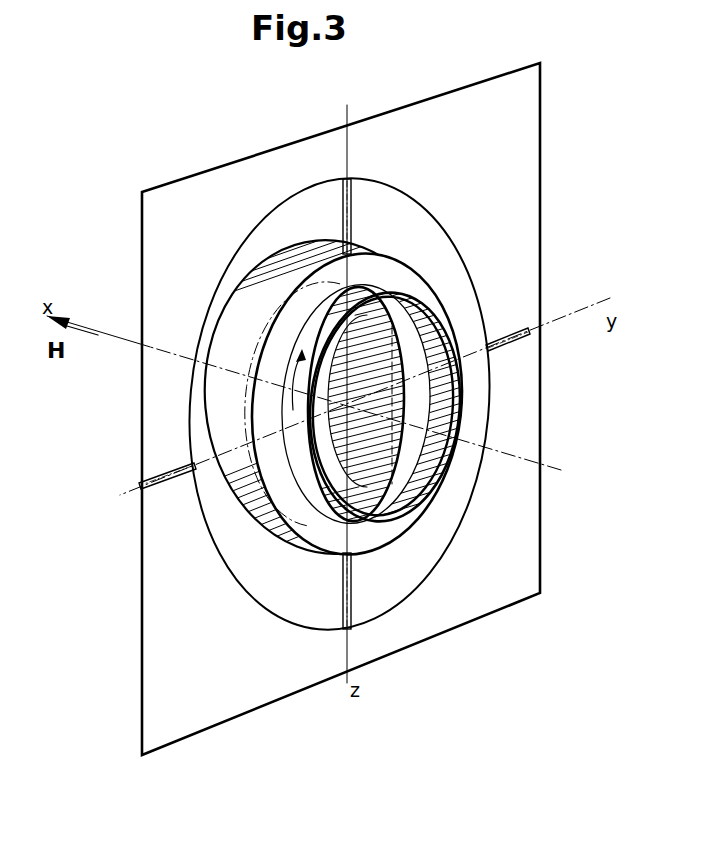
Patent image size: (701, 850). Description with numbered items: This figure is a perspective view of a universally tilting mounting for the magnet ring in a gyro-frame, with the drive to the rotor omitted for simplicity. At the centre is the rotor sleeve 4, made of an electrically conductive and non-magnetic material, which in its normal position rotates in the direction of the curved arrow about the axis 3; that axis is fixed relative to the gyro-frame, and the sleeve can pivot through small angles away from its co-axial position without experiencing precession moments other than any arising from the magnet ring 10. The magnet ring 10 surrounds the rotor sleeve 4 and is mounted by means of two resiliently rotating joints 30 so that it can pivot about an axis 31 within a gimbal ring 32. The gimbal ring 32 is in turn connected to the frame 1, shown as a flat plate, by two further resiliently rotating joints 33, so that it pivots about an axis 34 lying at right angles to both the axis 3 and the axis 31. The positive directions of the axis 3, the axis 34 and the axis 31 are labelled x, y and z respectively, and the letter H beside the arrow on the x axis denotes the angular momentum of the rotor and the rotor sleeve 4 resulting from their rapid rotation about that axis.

The frame 1 is at (545, 130).
The axis 3 is at (87, 323).
The rotor sleeve 4 is at (446, 338).
The magnet ring 10 is at (261, 329).
The resiliently rotating joints 30 is at (352, 222).
The axis 31 is at (351, 148).
The gimbal ring 32 is at (458, 217).
The further resiliently rotating joints 33 is at (163, 489).
The axis 34 is at (592, 300).